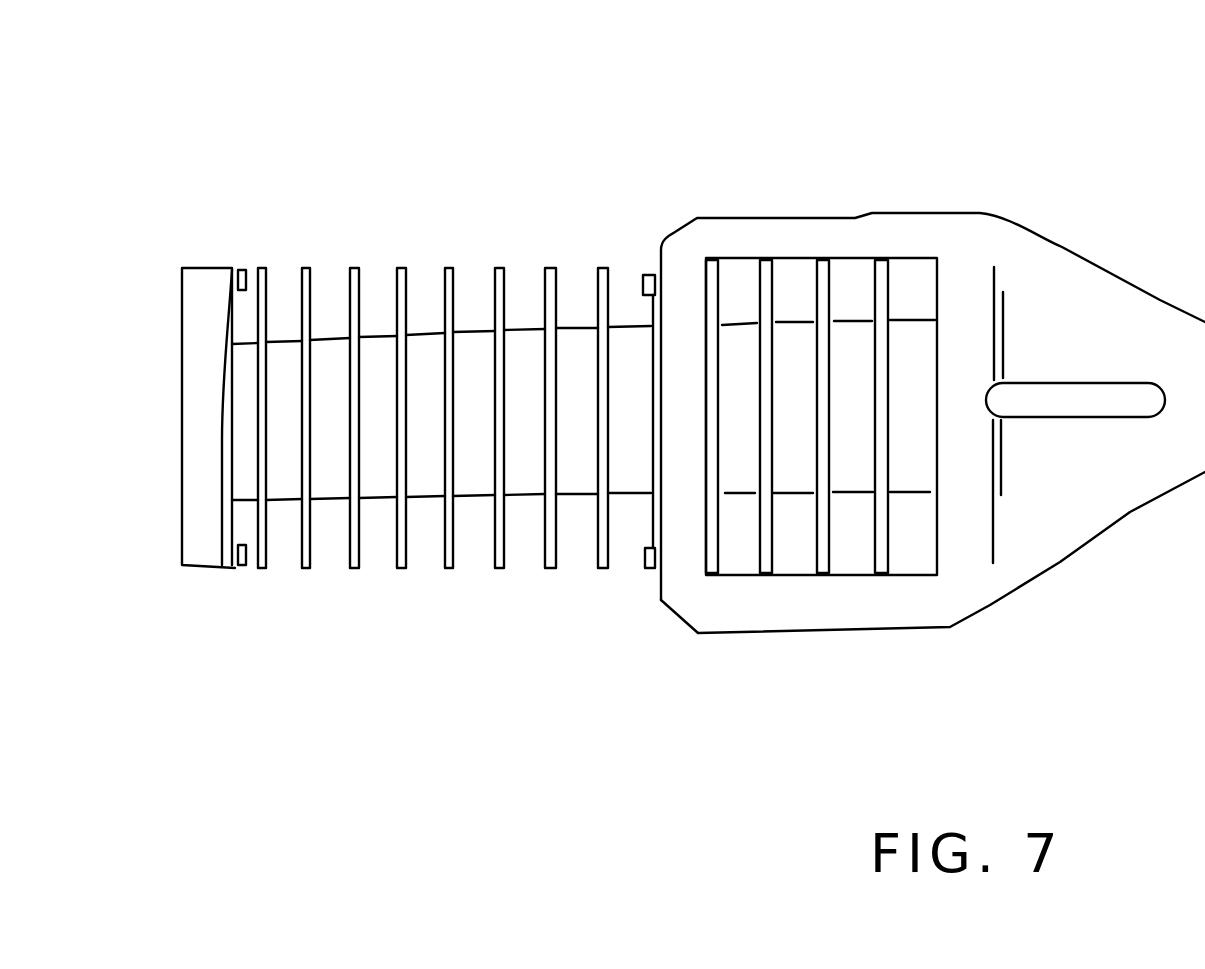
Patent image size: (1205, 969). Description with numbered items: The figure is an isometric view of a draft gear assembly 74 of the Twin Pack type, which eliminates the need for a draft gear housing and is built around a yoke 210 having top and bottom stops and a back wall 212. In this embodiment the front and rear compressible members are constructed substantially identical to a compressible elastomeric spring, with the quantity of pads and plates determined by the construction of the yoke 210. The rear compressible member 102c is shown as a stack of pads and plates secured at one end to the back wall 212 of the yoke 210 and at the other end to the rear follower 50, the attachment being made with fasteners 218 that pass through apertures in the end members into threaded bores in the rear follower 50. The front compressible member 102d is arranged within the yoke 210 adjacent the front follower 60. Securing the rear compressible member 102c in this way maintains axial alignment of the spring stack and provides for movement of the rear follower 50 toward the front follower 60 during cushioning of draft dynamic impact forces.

The draft gear assembly 74 is at (613, 122).
The rear follower 50 is at (208, 266).
The fasteners 218 is at (244, 268).
The rear compressible member 102c is at (488, 241).
The back wall 212 is at (656, 255).
The yoke 210 is at (965, 215).
The front compressible member 102d is at (817, 217).
The front follower 60 is at (906, 547).